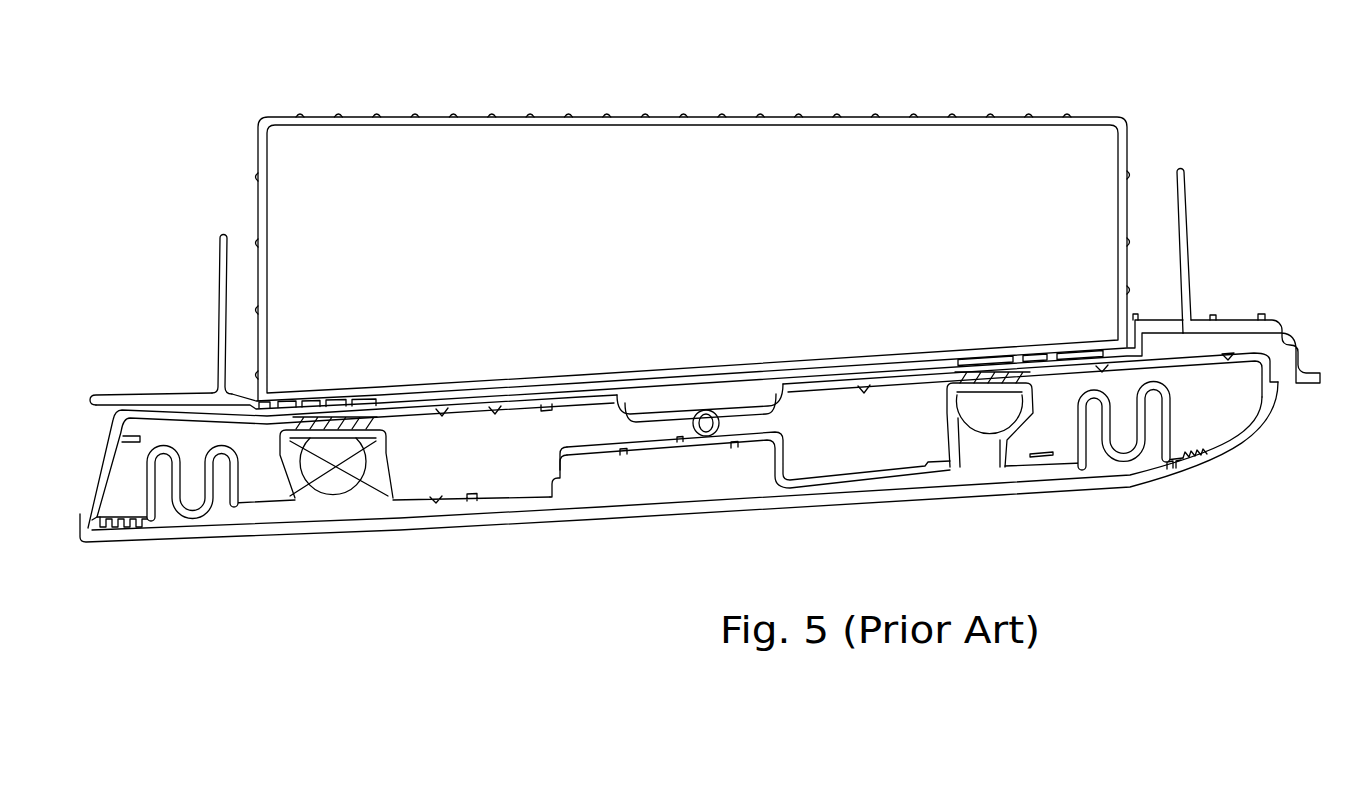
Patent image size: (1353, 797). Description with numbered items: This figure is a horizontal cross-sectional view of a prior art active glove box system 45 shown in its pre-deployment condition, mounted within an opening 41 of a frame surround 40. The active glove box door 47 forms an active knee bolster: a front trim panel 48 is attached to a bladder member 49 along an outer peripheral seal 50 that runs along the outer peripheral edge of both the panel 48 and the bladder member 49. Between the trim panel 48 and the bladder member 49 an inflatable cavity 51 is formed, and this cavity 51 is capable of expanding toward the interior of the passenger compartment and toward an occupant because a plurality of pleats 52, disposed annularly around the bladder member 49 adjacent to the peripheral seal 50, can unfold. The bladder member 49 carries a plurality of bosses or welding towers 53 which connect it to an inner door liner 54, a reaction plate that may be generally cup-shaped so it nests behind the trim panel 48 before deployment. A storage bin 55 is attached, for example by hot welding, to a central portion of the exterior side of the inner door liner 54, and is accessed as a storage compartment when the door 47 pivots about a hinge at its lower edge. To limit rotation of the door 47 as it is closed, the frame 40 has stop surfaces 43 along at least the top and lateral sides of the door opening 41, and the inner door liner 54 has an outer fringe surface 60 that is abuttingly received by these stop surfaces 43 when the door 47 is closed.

The frame surround 40 is at (210, 290).
The opening 41 is at (1151, 262).
The stop surfaces 43 is at (100, 406).
The active glove box system 45 is at (234, 86).
The active glove box door 47 is at (85, 490).
The front trim panel 48 is at (421, 530).
The bladder member 49 is at (516, 492).
The outer peripheral seal 50 is at (126, 528).
The inflatable cavity 51 is at (663, 478).
The pleats 52 is at (1178, 403).
The bosses or welding towers 53 is at (292, 480).
The inner door liner 54 is at (790, 390).
The storage bin 55 is at (806, 114).
The outer fringe surface 60 is at (118, 411).